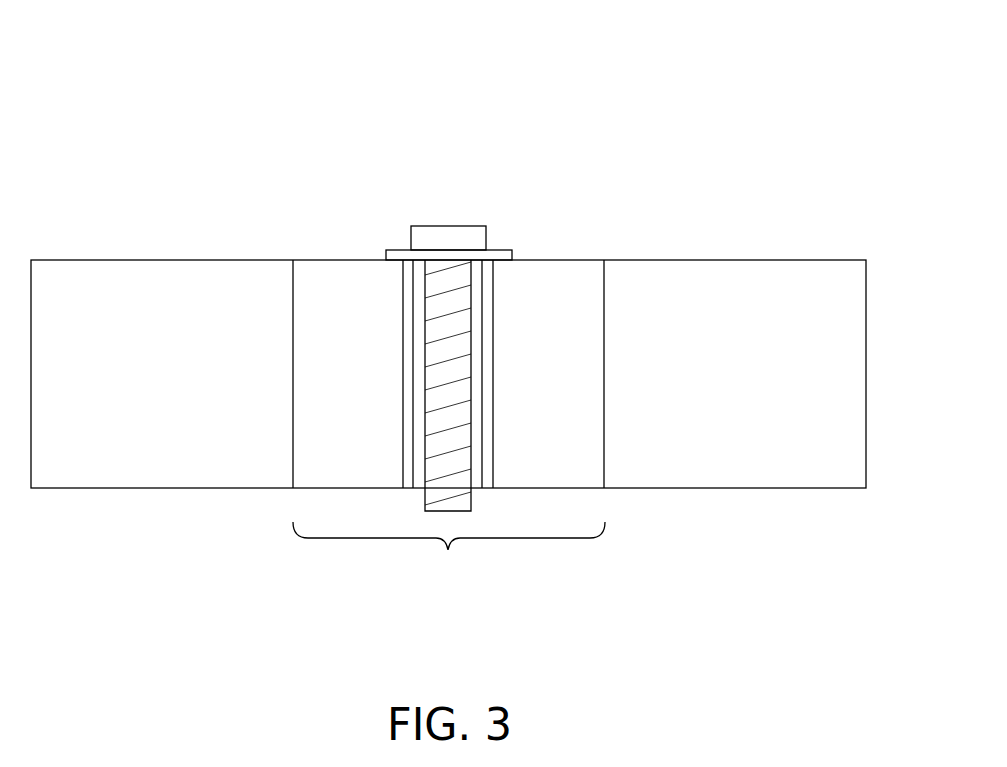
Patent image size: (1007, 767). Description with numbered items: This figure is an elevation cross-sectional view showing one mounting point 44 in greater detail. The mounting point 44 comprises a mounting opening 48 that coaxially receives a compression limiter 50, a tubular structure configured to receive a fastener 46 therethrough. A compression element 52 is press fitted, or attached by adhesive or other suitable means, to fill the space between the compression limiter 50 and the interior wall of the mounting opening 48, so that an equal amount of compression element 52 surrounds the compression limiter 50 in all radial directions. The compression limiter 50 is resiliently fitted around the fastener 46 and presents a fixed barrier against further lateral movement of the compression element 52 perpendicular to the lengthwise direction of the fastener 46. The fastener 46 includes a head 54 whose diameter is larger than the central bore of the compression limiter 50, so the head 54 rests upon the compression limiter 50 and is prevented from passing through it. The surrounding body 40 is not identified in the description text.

The panel 40 is at (792, 275).
The mounting point 44 is at (640, 78).
The fastener 46 is at (430, 225).
The mounting opening 48 is at (449, 552).
The compression limiter 50 is at (407, 288).
The compression element 52 is at (325, 273).
The head 54 is at (473, 232).